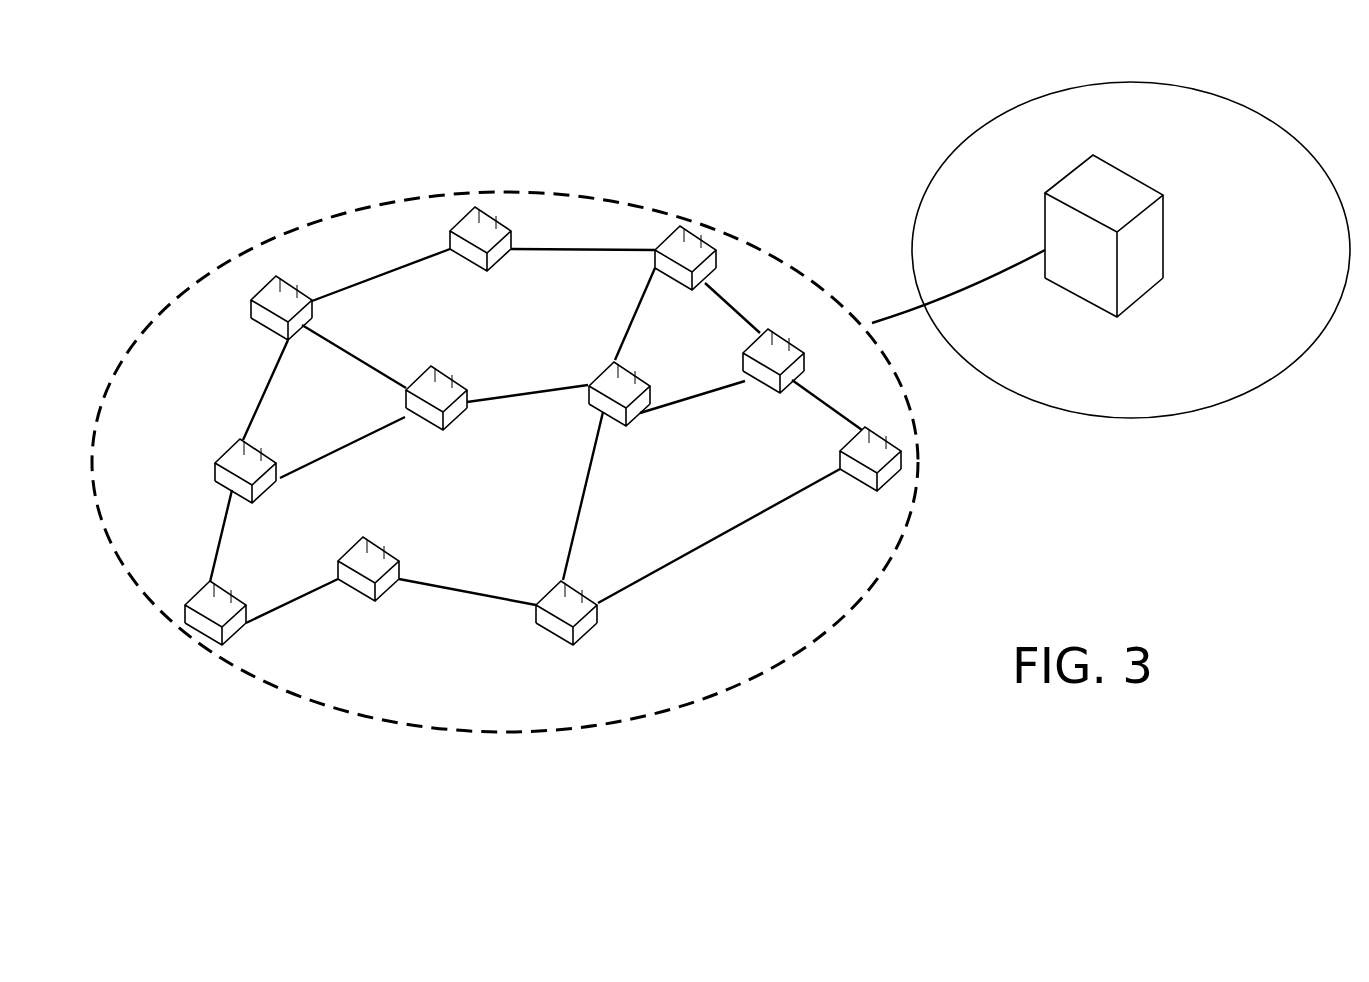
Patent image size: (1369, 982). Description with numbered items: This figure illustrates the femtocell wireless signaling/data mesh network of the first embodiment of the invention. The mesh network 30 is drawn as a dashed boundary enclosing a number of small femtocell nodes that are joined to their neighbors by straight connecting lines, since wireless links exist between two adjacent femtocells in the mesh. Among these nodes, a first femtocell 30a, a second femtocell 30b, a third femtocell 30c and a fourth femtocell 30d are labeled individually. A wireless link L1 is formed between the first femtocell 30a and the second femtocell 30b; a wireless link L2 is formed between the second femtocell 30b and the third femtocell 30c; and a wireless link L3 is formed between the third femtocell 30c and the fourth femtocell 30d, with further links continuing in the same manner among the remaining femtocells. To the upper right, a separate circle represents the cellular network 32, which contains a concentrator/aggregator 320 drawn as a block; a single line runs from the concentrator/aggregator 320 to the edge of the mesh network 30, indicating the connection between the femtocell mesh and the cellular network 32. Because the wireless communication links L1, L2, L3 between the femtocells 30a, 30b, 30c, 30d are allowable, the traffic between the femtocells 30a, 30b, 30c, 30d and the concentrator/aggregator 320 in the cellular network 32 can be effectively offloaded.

The ad hoc network 30 is at (578, 196).
The first femtocell 30a is at (400, 560).
The second femtocell 30b is at (549, 590).
The third femtocell 30c is at (626, 427).
The fourth femtocell 30d is at (443, 430).
The cellular network 32 is at (940, 172).
The concentrator/aggregator 320 is at (1060, 182).
The wireless link L1 is at (462, 593).
The wireless link L2 is at (590, 480).
The wireless link L3 is at (520, 393).